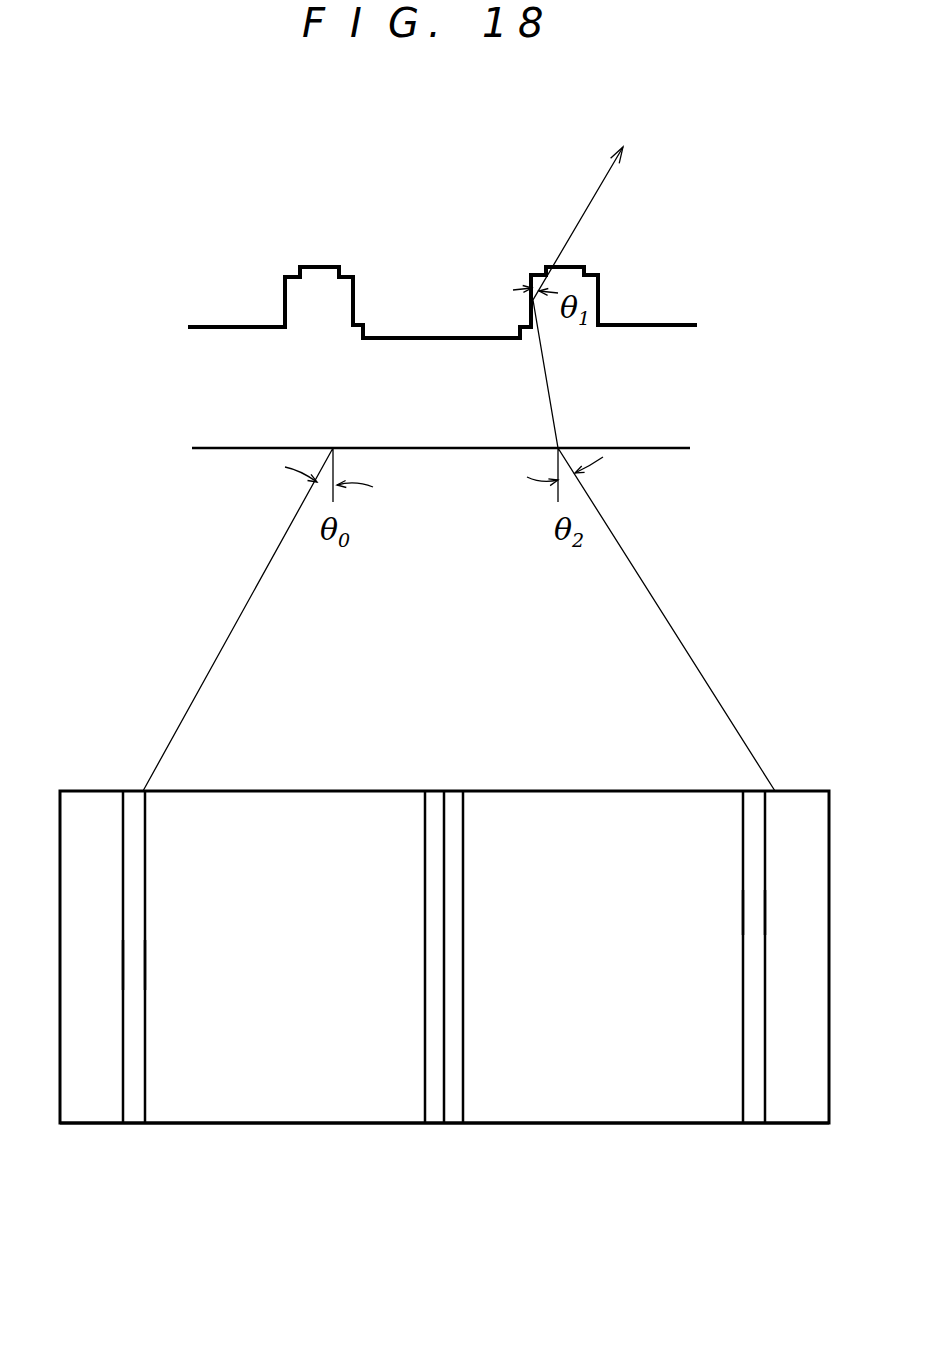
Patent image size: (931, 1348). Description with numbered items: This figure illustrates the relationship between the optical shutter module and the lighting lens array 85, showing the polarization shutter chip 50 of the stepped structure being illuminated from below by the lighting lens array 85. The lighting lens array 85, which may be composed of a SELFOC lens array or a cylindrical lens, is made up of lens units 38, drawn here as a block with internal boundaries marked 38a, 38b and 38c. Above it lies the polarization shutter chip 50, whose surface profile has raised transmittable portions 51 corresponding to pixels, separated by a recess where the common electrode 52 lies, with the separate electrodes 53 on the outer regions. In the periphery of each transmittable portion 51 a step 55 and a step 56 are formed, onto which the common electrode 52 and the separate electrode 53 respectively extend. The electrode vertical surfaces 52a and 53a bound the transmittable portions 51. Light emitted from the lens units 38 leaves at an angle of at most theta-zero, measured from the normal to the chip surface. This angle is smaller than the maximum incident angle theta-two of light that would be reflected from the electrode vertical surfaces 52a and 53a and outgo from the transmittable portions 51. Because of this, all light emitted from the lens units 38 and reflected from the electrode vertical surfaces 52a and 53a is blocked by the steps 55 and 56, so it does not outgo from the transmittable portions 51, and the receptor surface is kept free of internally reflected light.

The lens unit 38 is at (337, 813).
The land portion 38a is at (257, 813).
The land portion 38b is at (743, 858).
The groove track 38c is at (105, 968).
The polarization shutter chip 50 is at (250, 448).
The transmittable portion 51 is at (323, 303).
The common electrode 52 is at (453, 337).
The electrode vertical surface 52a is at (357, 303).
The separate electrode 53 is at (225, 325).
The electrode vertical surface 53a is at (283, 295).
The step 55 is at (350, 270).
The step 56 is at (293, 268).
The lighting lens array 85 is at (527, 1125).